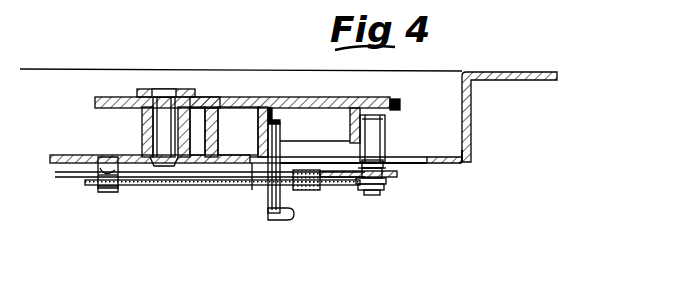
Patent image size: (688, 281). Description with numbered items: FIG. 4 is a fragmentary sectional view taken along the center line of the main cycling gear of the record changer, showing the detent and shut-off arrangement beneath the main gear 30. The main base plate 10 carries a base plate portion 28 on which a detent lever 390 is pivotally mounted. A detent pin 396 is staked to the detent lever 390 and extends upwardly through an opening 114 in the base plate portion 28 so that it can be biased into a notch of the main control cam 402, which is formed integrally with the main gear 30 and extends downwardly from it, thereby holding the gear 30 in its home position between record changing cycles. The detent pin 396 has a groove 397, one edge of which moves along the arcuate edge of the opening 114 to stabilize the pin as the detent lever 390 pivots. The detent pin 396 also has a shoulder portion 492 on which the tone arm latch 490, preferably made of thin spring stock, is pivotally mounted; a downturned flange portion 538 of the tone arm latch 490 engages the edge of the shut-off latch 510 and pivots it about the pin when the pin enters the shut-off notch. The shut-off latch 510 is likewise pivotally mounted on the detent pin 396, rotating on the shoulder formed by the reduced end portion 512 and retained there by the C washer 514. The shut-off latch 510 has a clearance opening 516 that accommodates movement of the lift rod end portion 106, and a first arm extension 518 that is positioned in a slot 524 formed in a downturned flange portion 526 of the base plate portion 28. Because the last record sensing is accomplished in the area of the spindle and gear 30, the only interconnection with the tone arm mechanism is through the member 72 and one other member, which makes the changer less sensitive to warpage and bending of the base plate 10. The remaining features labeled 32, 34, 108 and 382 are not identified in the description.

The main base plate 10 is at (522, 72).
The base plate portion 28 is at (445, 157).
The main gear 30 is at (327, 99).
The bolt 32 is at (170, 88).
The plate surface 34 is at (194, 96).
The member 72 is at (278, 222).
The lift rod end portion 106 is at (282, 137).
The pipe bracket 108 is at (282, 112).
The opening 114 is at (252, 190).
The housing cavity 382 is at (224, 146).
The detent lever 390 is at (392, 182).
The detent pin 396 is at (372, 114).
The groove 397 is at (352, 143).
The main control cam 402 is at (368, 128).
The tone arm latch 490 is at (398, 175).
The shoulder portion 492 is at (370, 164).
The shut-off latch 510 is at (386, 188).
The reduced end portion 512 is at (368, 196).
The C washer 514 is at (374, 191).
The clearance opening 516 is at (364, 192).
The first arm extension 518 is at (145, 187).
The slot 524 is at (97, 188).
The downturned flange portion 526 is at (107, 157).
The downturned flange portion 538 is at (318, 190).